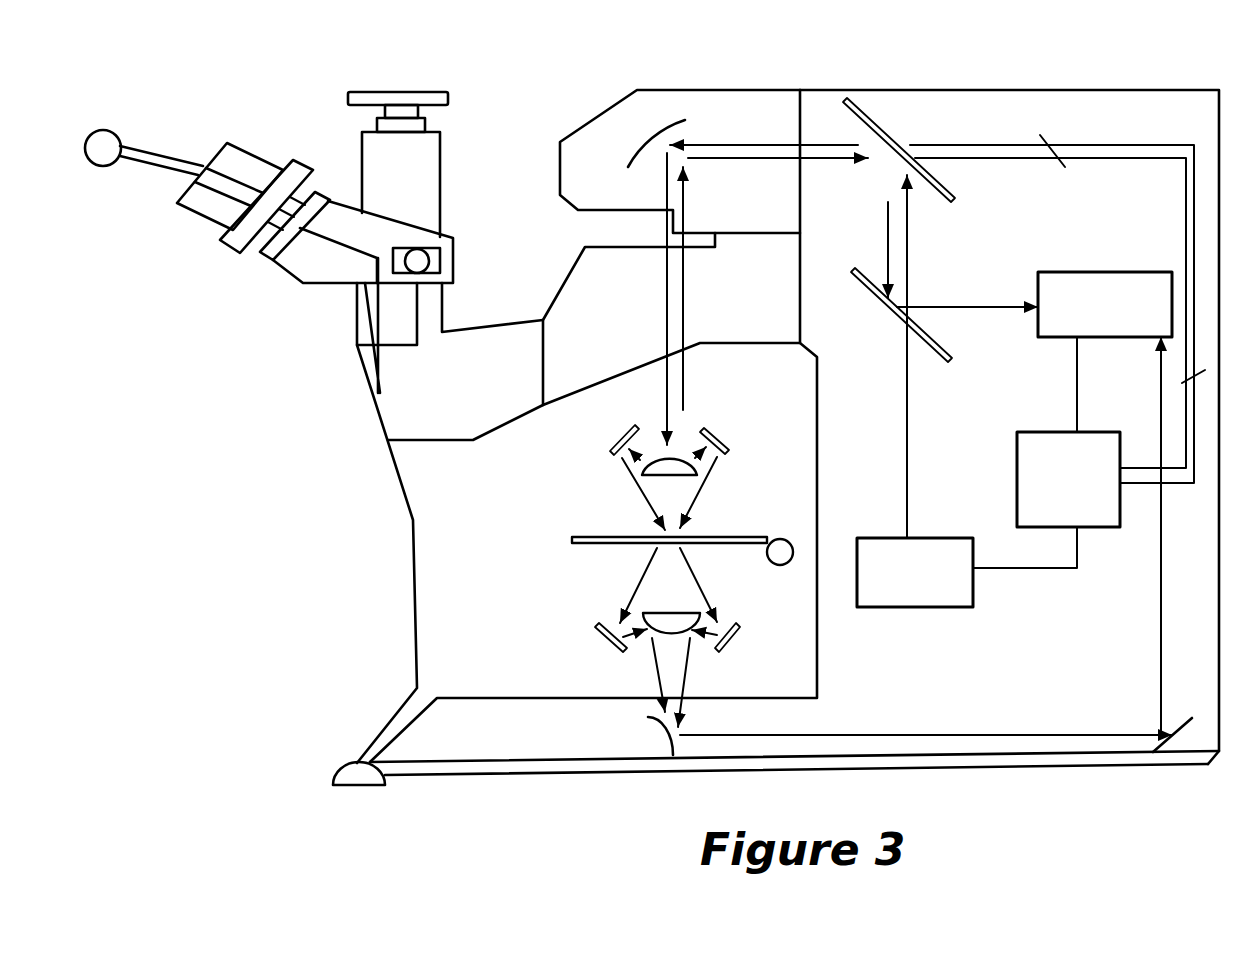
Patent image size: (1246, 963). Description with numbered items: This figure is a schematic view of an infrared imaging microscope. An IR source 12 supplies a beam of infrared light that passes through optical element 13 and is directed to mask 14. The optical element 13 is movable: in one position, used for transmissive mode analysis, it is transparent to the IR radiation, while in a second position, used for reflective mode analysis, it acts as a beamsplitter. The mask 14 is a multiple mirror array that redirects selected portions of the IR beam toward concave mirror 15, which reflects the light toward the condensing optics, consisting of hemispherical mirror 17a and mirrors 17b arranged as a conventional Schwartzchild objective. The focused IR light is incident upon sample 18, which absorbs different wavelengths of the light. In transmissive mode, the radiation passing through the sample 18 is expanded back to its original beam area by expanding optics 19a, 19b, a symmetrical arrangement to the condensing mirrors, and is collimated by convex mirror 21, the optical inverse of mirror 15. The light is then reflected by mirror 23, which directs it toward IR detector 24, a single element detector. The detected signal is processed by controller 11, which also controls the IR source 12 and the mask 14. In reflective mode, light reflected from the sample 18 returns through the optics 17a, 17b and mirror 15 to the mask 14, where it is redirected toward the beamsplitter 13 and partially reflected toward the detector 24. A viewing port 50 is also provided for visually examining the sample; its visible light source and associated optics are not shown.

The viewing port 50 is at (253, 153).
The concave mirror 15 is at (645, 142).
The mask 14 is at (882, 128).
The optical element 13 is at (945, 358).
The IR detector 24 is at (1102, 270).
The controller 11 is at (1098, 527).
The IR source 12 is at (923, 607).
The mirror 23 is at (1172, 733).
The convex mirror 21 is at (667, 737).
The hemispherical mirror 17a is at (650, 480).
The mirrors 17b is at (622, 438).
The sample 18 is at (603, 545).
The expanding optics 19a is at (703, 598).
The expanding optics 19b is at (603, 642).